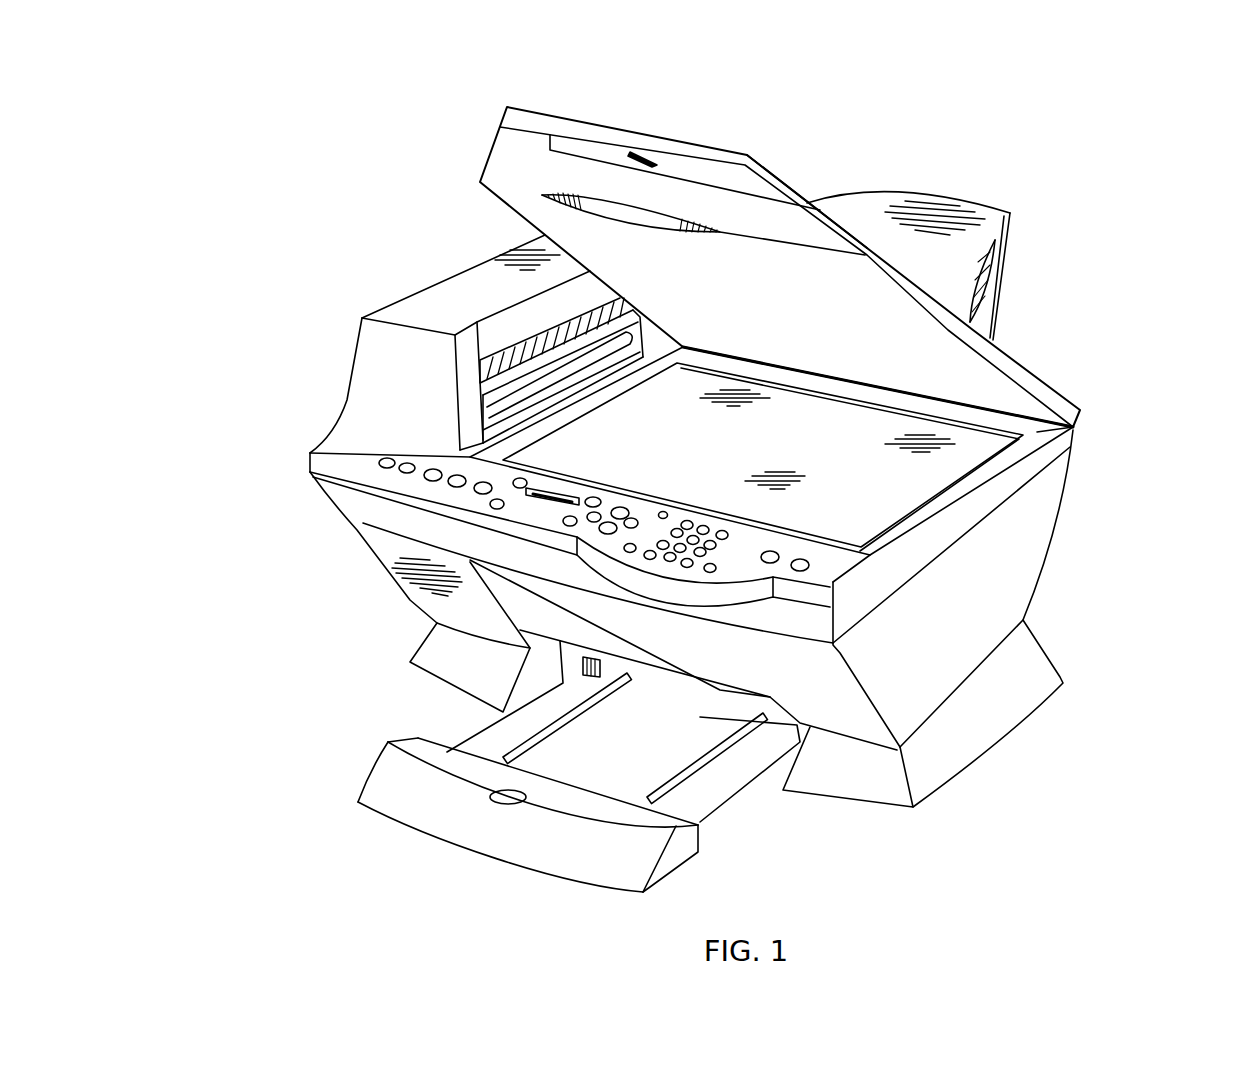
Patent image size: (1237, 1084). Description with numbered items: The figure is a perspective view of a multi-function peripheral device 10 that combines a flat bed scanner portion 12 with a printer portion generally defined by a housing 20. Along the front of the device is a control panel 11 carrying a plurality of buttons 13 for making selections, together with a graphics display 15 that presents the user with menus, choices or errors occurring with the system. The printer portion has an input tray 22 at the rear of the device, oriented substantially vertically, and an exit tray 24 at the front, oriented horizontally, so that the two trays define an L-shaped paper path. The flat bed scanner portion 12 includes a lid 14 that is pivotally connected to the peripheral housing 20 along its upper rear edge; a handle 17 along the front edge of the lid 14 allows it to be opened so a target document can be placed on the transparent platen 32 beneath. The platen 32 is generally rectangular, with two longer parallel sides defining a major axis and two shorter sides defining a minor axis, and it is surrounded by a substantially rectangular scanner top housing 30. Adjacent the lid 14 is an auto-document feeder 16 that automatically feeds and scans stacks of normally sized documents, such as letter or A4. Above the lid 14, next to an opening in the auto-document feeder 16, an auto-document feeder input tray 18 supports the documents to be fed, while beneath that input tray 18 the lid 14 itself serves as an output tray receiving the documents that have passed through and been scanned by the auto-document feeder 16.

The multi-function peripheral device 10 is at (1037, 167).
The control panel 11 is at (356, 453).
The flat bed scanner portion 12 is at (993, 482).
The buttons 13 is at (661, 530).
The lid 14 is at (1043, 387).
The graphics display 15 is at (540, 500).
The auto-document feeder 16 is at (449, 287).
The handle 17 is at (640, 215).
The auto-document feeder input tray 18 is at (767, 177).
The housing 20 is at (987, 603).
The input tray 22 is at (1005, 214).
The exit tray 24 is at (403, 828).
The scanner top housing 30 is at (1037, 432).
The transparent platen 32 is at (623, 458).